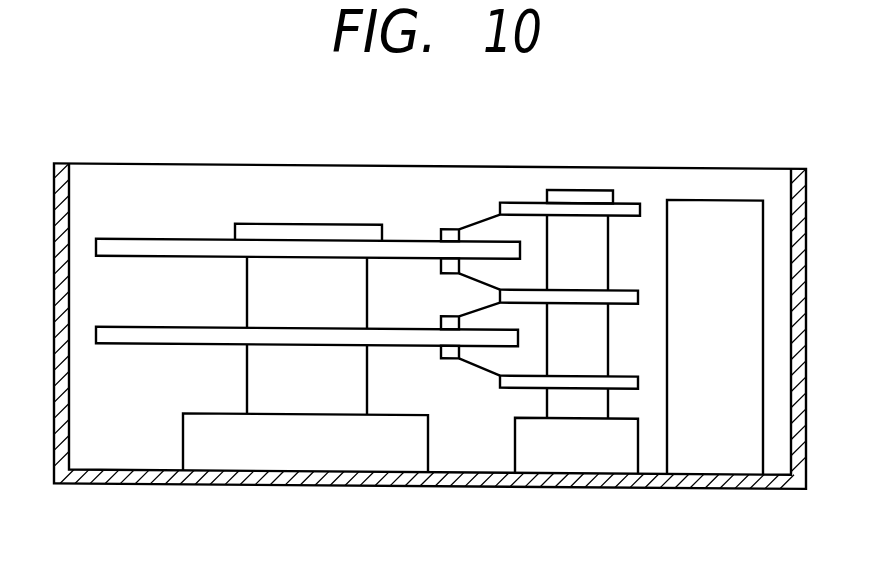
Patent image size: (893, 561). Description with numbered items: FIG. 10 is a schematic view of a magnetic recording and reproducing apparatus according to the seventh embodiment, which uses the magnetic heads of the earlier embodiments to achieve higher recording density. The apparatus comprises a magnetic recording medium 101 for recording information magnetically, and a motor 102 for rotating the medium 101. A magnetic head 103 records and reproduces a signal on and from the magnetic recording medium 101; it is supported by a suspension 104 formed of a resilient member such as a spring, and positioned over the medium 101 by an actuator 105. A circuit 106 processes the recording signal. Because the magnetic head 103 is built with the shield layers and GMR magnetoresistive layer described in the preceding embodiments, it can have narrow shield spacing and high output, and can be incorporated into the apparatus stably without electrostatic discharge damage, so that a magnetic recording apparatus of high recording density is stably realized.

The magnetic recording medium 101 is at (201, 332).
The motor 102 is at (240, 448).
The magnetic head 103 is at (450, 225).
The suspension 104 is at (475, 218).
The actuator 105 is at (585, 196).
The circuit 106 is at (728, 213).